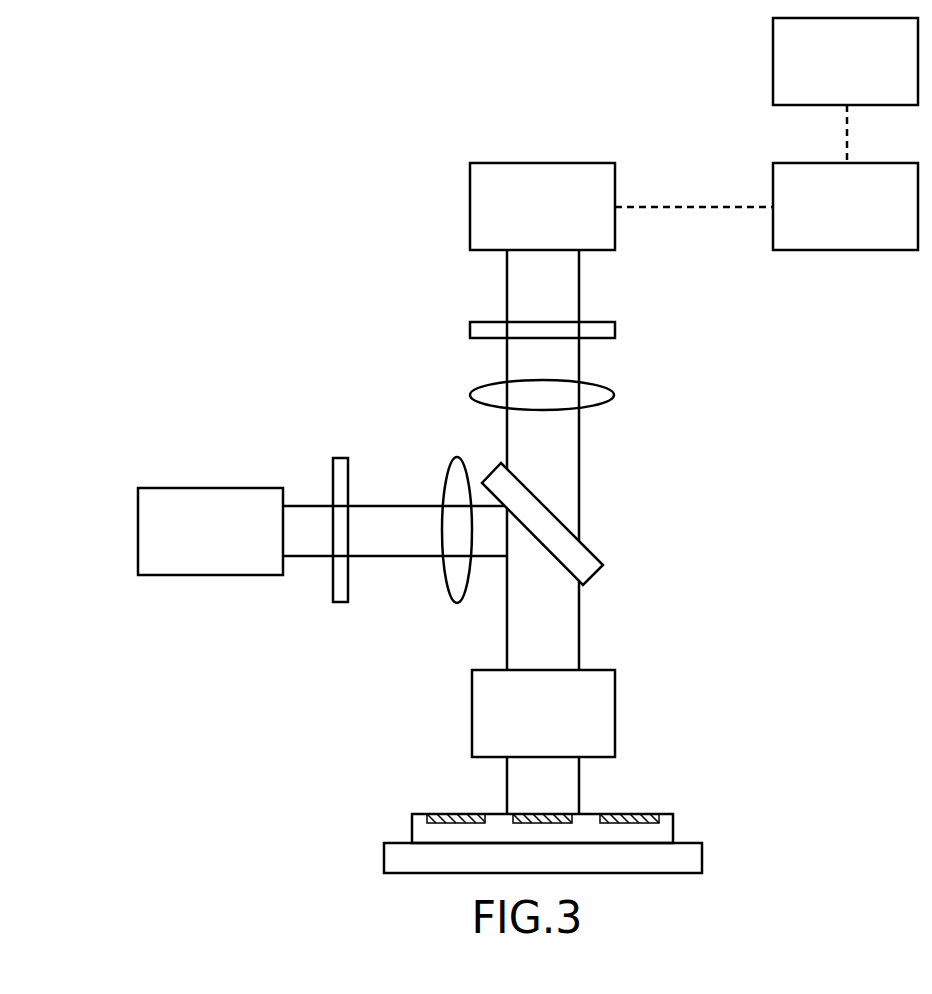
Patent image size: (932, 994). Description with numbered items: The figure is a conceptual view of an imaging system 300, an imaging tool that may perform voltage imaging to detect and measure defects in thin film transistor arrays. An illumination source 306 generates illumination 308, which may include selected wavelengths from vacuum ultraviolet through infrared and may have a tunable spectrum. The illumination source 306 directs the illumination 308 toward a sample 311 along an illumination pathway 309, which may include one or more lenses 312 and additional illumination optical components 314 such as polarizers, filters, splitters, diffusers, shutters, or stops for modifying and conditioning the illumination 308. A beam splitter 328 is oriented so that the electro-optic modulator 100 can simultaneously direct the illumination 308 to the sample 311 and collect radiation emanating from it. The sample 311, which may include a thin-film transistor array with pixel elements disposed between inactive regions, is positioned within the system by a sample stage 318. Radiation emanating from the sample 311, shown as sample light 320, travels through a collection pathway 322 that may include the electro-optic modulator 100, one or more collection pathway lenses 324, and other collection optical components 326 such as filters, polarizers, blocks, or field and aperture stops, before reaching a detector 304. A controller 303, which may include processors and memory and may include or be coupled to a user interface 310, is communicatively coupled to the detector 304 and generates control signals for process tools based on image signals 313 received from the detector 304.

The imaging system 300 is at (218, 51).
The user interface 310 is at (828, 76).
The controller 303 is at (828, 221).
The image signals 313 is at (678, 208).
The detector 304 is at (524, 221).
The collection pathway 322 is at (603, 452).
The collection optical components 326 is at (486, 322).
The collection pathway lenses 324 is at (600, 385).
The illumination pathway 309 is at (377, 400).
The illumination source 306 is at (192, 544).
The illumination 308 is at (310, 505).
The illumination optical components 314 is at (340, 603).
The lenses 312 is at (456, 604).
The beam splitter 328 is at (600, 557).
The electro-optic modulator 100 is at (525, 726).
The sample light 320 is at (581, 787).
The sample 311 is at (412, 830).
The sample stage 318 is at (384, 862).